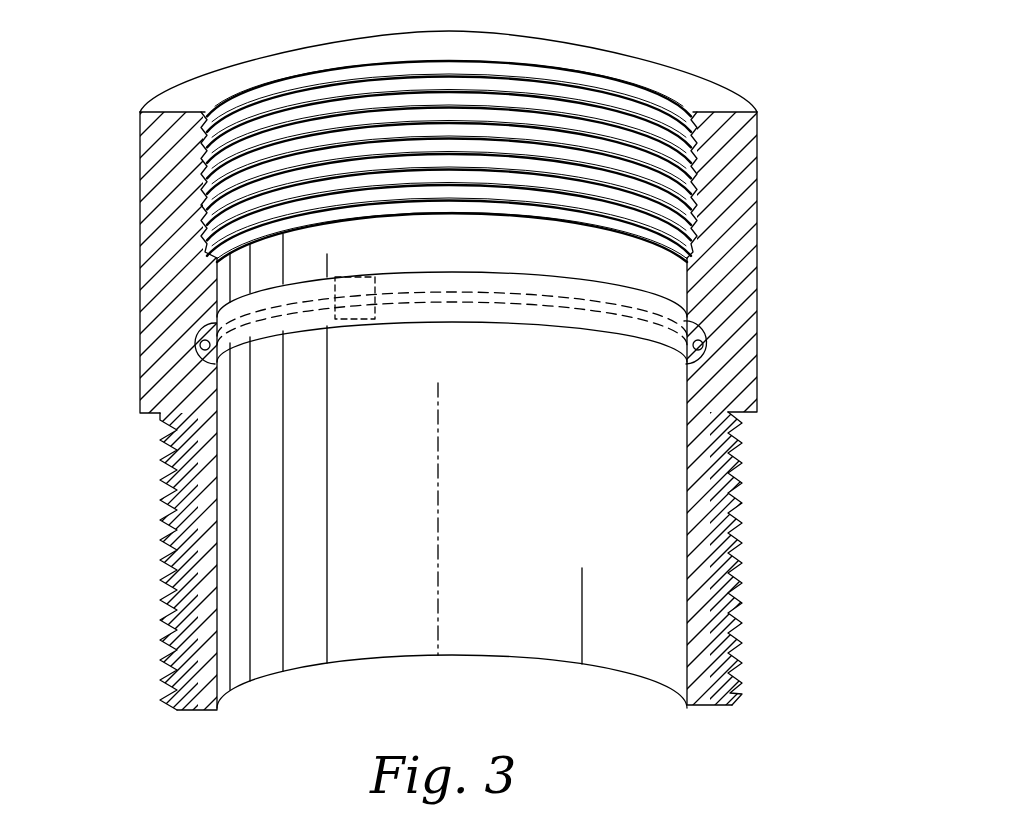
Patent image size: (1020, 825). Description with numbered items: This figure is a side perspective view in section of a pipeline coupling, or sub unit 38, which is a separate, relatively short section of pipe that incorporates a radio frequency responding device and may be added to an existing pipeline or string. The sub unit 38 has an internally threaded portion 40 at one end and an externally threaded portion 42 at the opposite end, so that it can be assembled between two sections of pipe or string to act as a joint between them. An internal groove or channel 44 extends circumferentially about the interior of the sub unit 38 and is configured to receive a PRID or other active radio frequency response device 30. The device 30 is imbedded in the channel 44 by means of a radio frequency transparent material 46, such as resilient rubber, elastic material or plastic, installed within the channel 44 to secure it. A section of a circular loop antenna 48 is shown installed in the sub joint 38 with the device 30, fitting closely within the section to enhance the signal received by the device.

The radio frequency response device 30 is at (353, 320).
The sub unit 38 is at (745, 756).
The internally threaded portion 40 is at (243, 84).
The externally threaded portion 42 is at (167, 648).
The internal groove or channel 44 is at (684, 351).
The radio frequency transparent material 46 is at (514, 274).
The loop antenna 48 is at (553, 308).